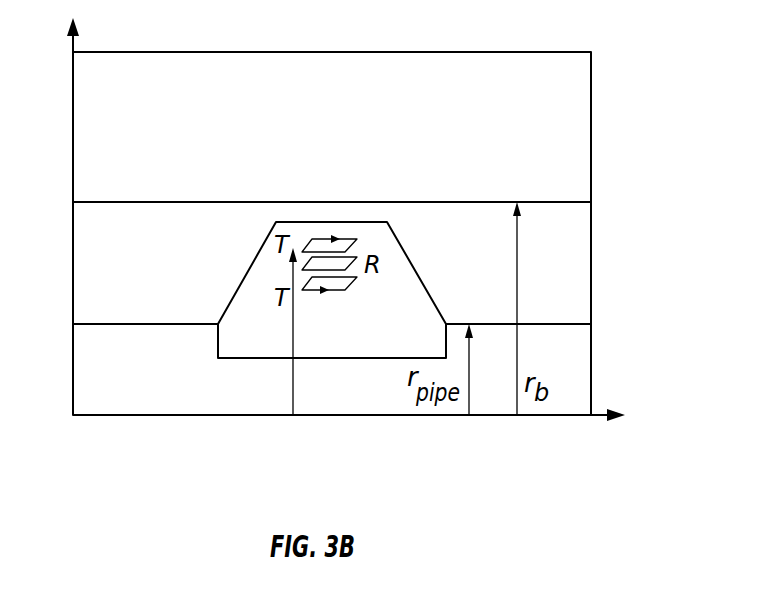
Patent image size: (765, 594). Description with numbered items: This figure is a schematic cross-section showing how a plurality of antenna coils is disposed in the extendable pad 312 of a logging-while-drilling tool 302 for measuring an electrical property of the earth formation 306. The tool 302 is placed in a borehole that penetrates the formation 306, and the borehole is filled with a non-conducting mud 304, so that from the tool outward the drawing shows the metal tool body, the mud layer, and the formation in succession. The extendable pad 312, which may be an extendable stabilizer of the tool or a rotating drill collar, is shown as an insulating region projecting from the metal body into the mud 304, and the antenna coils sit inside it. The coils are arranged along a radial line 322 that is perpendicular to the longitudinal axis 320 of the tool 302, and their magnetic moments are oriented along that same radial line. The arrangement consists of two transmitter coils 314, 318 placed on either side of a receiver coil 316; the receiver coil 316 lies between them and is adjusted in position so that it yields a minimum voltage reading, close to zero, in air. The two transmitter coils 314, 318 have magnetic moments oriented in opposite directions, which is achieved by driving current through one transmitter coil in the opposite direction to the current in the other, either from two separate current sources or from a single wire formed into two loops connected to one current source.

The logging-while-drilling (LWD) tool 302 is at (578, 360).
The non-conducting mud 304 is at (578, 248).
The formation 306 is at (578, 117).
The extendable pad 312 is at (232, 313).
The transmitter coil 314 is at (341, 238).
The receiver coil 316 is at (352, 252).
The transmitter coil 318 is at (352, 282).
The longitudinal axis 320 is at (447, 415).
The radial line 322 is at (294, 403).